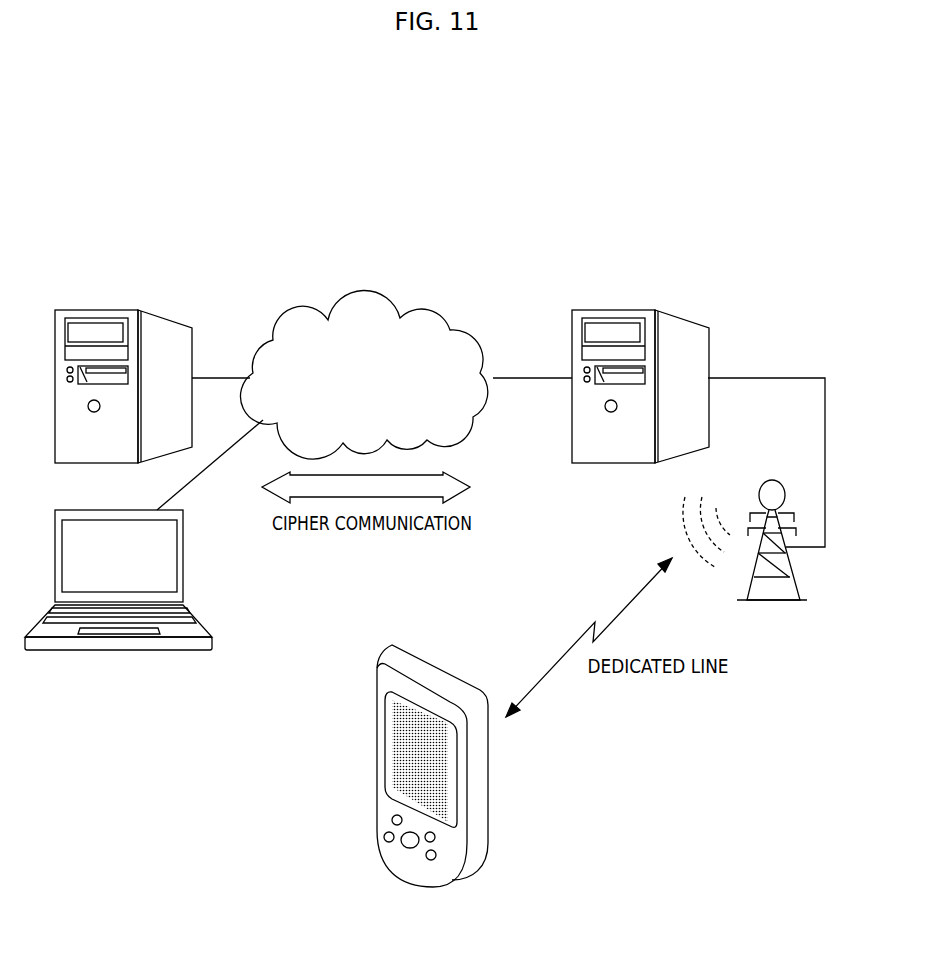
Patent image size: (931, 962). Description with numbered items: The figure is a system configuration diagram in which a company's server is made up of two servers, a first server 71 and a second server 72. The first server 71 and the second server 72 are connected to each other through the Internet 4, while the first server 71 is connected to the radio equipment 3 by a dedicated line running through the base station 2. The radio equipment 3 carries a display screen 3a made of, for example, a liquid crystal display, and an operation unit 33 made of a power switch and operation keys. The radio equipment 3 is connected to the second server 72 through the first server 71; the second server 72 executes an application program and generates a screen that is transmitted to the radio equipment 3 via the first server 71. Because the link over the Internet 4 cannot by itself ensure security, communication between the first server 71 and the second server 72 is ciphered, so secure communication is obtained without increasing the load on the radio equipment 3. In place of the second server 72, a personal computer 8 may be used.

The second server 72 is at (161, 314).
The first server 71 is at (686, 318).
The Internet 4 is at (380, 293).
The PC (Personal Computer) 8 is at (183, 550).
The base station 2 is at (768, 610).
The radio equipment 3 is at (426, 798).
The display screen 3a is at (442, 778).
The operation unit 33 is at (410, 848).